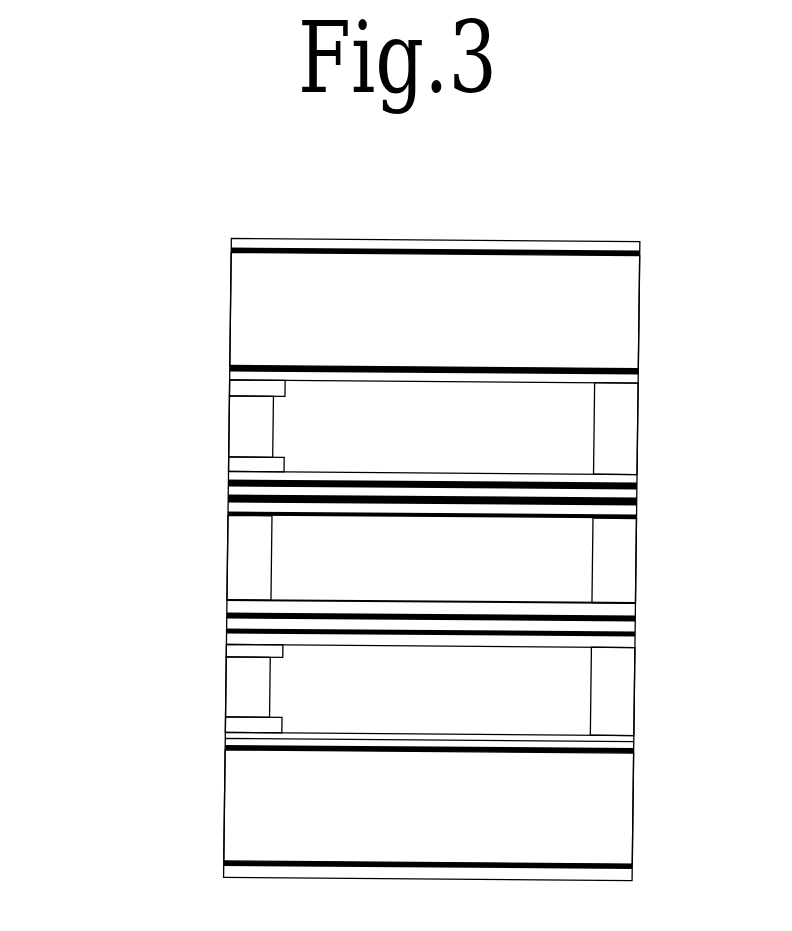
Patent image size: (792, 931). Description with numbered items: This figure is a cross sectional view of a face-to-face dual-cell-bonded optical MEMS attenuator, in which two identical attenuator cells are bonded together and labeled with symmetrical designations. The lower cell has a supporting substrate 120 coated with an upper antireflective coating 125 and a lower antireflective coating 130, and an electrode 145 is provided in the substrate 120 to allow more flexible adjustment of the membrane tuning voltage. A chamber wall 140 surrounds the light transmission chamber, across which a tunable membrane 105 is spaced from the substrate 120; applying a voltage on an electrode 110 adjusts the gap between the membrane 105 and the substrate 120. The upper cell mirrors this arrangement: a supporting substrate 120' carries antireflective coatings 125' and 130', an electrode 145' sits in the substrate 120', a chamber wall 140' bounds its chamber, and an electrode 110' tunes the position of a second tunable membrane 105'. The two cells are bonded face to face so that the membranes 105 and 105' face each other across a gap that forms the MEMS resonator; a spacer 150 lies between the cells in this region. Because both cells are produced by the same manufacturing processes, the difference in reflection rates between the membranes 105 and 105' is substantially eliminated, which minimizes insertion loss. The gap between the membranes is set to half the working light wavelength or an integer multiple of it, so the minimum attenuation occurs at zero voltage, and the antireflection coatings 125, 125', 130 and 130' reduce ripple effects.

The lower antireflective coating 130' is at (427, 237).
The supporting substrate 120' is at (362, 310).
The upper antireflective coating 125' is at (498, 371).
The electrode 145' is at (185, 391).
The chamber wall 140' is at (426, 427).
The electrode 110' is at (184, 455).
The tunable membrane 105' is at (497, 493).
The spacer 150 is at (258, 557).
The tunable membrane 105 is at (489, 626).
The electrode 110 is at (182, 642).
The chamber wall 140 is at (417, 689).
The electrode 145 is at (182, 716).
The upper antireflective coating 125 is at (358, 742).
The supporting substrate 120 is at (358, 807).
The lower antireflective coating 130 is at (357, 861).